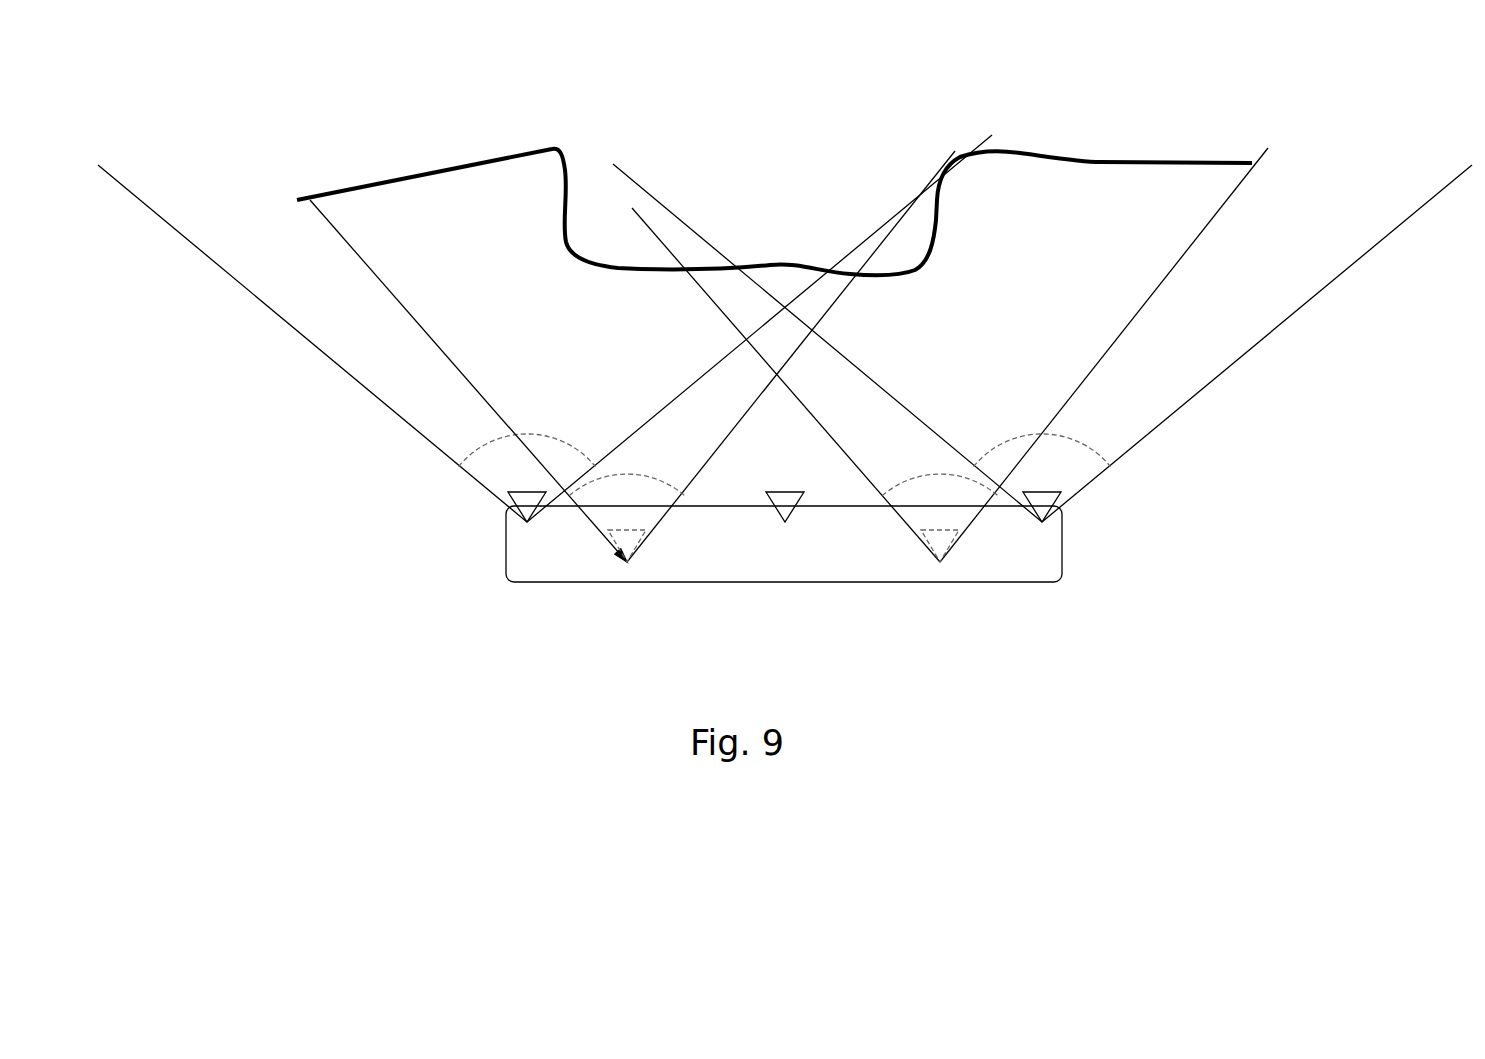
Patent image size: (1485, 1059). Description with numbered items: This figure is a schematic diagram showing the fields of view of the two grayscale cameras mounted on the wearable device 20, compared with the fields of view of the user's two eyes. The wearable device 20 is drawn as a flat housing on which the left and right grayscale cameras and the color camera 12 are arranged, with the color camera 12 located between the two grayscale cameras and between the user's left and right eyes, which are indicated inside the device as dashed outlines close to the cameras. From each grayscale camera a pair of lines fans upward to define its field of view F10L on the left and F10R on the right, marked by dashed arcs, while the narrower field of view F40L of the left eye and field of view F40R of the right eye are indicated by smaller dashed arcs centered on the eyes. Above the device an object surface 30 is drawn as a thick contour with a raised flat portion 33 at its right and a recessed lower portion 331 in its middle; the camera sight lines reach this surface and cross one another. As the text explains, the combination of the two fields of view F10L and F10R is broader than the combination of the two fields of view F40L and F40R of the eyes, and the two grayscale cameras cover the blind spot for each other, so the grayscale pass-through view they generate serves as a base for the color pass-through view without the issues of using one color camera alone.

The object / target surface 30 is at (767, 166).
The flat surface portion of object 33 is at (1101, 162).
The recessed surface portion of object 331 is at (763, 263).
The wearable device 20 is at (570, 570).
The color camera 12 is at (785, 522).
The field of view F10L is at (540, 434).
The field of view F10R is at (1016, 437).
The field of view F40L is at (664, 481).
The field of view F40R is at (907, 480).